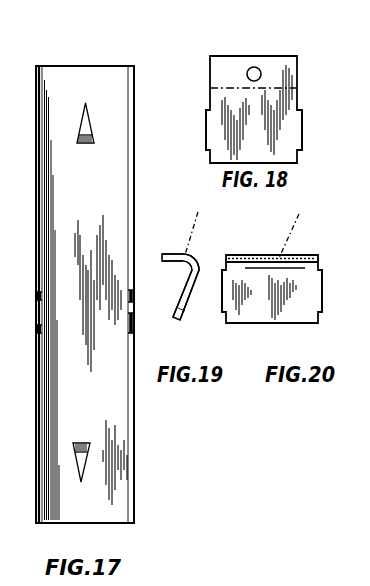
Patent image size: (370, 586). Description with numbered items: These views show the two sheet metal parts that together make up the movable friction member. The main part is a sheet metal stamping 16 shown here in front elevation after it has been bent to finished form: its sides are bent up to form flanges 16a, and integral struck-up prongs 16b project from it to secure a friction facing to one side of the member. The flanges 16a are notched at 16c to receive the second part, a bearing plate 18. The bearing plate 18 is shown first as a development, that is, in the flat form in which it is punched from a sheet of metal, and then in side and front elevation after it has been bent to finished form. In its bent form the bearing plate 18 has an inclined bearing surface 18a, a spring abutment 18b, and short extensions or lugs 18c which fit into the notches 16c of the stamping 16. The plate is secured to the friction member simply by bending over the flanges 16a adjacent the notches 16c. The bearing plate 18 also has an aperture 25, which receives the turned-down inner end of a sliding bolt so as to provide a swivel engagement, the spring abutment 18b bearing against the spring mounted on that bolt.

In FIG. 17, the sheet metal stamping 16 is at (68, 80).
In FIG. 17, the flanges 16a is at (37, 168).
In FIG. 17, the struck-up prongs 16b is at (87, 144).
In FIG. 17, the notches 16c is at (148, 309).
In FIG. 18, the bearing plate 18 is at (290, 60).
In FIG. 19, the bearing plate 18 is at (197, 262).
In FIG. 20, the bearing plate 18 is at (285, 268).
In FIG. 19, the inclined bearing surface 18a is at (188, 305).
In FIG. 20, the inclined bearing surface 18a is at (264, 312).
In FIG. 18, the spring abutment 18b is at (224, 58).
In FIG. 19, the spring abutment 18b is at (178, 254).
In FIG. 20, the spring abutment 18b is at (253, 257).
In FIG. 18, the lugs 18c is at (302, 115).
In FIG. 19, the lugs 18c is at (190, 284).
In FIG. 20, the lugs 18c is at (224, 268).
In FIG. 18, the aperture 25 is at (256, 66).
In FIG. 19, the aperture 25 is at (198, 226).
In FIG. 20, the aperture 25 is at (294, 227).